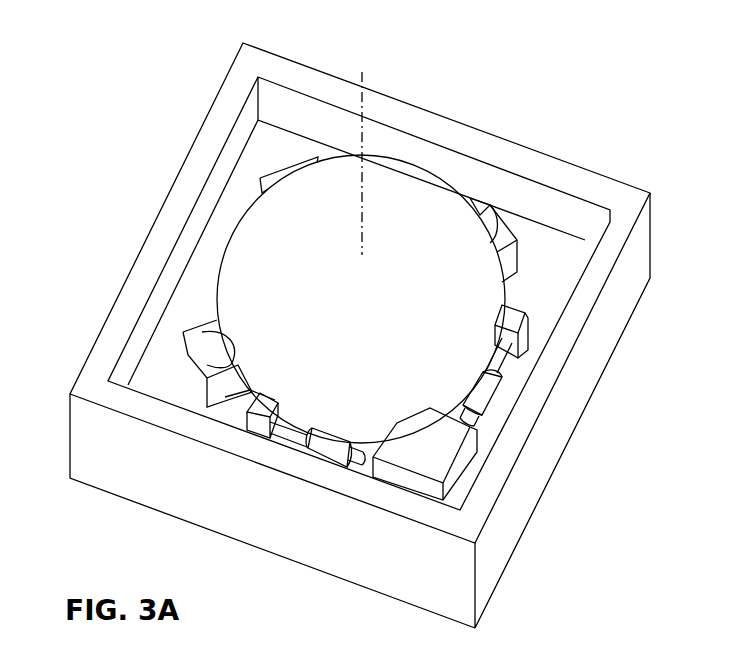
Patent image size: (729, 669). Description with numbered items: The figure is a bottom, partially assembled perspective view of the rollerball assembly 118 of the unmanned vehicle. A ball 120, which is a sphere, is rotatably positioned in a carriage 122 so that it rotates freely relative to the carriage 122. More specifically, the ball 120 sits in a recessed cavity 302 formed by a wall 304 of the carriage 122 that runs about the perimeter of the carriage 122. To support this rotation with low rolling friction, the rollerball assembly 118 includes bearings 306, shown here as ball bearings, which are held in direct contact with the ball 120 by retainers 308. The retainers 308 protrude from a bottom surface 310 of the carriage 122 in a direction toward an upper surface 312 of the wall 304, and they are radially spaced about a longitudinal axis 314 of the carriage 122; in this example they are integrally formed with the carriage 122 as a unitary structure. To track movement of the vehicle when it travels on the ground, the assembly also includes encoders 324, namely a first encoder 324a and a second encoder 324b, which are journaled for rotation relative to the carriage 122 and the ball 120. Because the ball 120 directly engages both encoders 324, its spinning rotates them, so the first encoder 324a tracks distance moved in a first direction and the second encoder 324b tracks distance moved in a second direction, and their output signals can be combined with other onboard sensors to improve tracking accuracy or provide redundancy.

The rollerball assembly 118 is at (595, 98).
The ball 120 is at (247, 262).
The carriage 122 is at (377, 573).
The cavity 302 is at (557, 245).
The wall 304 is at (208, 148).
The bearings 306 is at (208, 343).
The retainers 308 is at (260, 182).
The surface 310 is at (263, 147).
The surface 312 is at (153, 267).
The longitudinal axis 314 is at (363, 88).
The encoders 324 is at (449, 450).
The first encoder 324a is at (482, 398).
The second encoder 324b is at (325, 455).